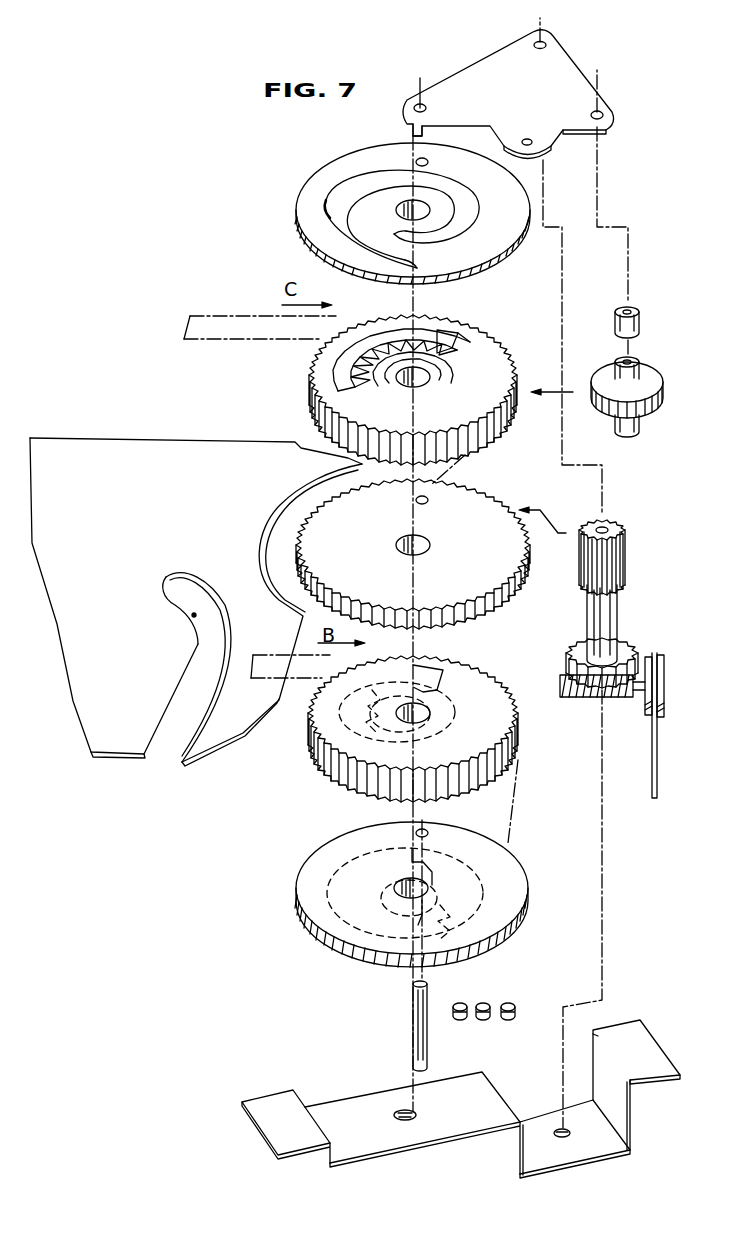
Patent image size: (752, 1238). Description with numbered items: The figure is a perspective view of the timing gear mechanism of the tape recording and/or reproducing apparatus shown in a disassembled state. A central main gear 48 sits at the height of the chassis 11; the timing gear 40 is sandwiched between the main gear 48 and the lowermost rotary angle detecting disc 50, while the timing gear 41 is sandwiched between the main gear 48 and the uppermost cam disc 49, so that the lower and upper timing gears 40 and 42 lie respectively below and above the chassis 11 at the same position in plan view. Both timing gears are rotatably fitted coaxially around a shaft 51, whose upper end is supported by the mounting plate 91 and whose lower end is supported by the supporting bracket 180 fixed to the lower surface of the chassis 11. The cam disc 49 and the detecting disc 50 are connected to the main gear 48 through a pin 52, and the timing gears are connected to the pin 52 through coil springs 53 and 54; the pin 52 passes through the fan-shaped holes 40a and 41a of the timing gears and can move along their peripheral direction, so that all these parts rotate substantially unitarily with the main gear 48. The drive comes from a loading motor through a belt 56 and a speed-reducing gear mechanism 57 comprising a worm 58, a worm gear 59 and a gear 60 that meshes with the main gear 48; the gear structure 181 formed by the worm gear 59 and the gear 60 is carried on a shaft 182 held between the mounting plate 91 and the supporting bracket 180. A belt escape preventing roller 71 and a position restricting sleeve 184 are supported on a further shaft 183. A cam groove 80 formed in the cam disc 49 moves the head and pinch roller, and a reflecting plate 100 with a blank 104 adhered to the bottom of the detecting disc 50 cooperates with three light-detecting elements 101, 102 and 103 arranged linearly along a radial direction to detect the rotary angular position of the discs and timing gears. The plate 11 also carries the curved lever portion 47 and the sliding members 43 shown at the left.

The chassis 11 is at (188, 440).
The timing gear 40 is at (325, 770).
The fan-shaped hole 40a is at (432, 668).
The timing gear 41 is at (310, 402).
The fan-shaped hole 41a is at (448, 332).
The timing gear 42 is at (277, 650).
The slide bar C 43 is at (258, 312).
The hook lever 47 is at (194, 616).
The main gear 48 is at (487, 500).
The cam disc 49 is at (523, 226).
The rotary angle detecting disc 50 is at (510, 866).
The shaft 51 is at (412, 133).
The pin 52 is at (411, 1004).
The coil spring 53 is at (397, 721).
The coil spring 54 is at (338, 378).
The belt 56 is at (658, 748).
The gear mechanism 57 is at (653, 634).
The worm 58 is at (591, 698).
The worm gear 59 is at (627, 637).
The gear 60 is at (626, 559).
The belt escape preventing roller 71 is at (655, 375).
The cam groove 80 is at (330, 200).
The mounting plate 91 is at (444, 88).
The reflecting plate 100 is at (300, 920).
The light-detecting element 101 is at (456, 1021).
The light-detecting element 102 is at (483, 1021).
The light-detecting element 103 is at (509, 1021).
The blank 104 is at (497, 947).
The supporting bracket 180 is at (352, 1102).
The gear structure 181 is at (586, 607).
The shaft 182 is at (545, 20).
The shaft 183 is at (600, 75).
The position restricting sleeve 184 is at (640, 321).